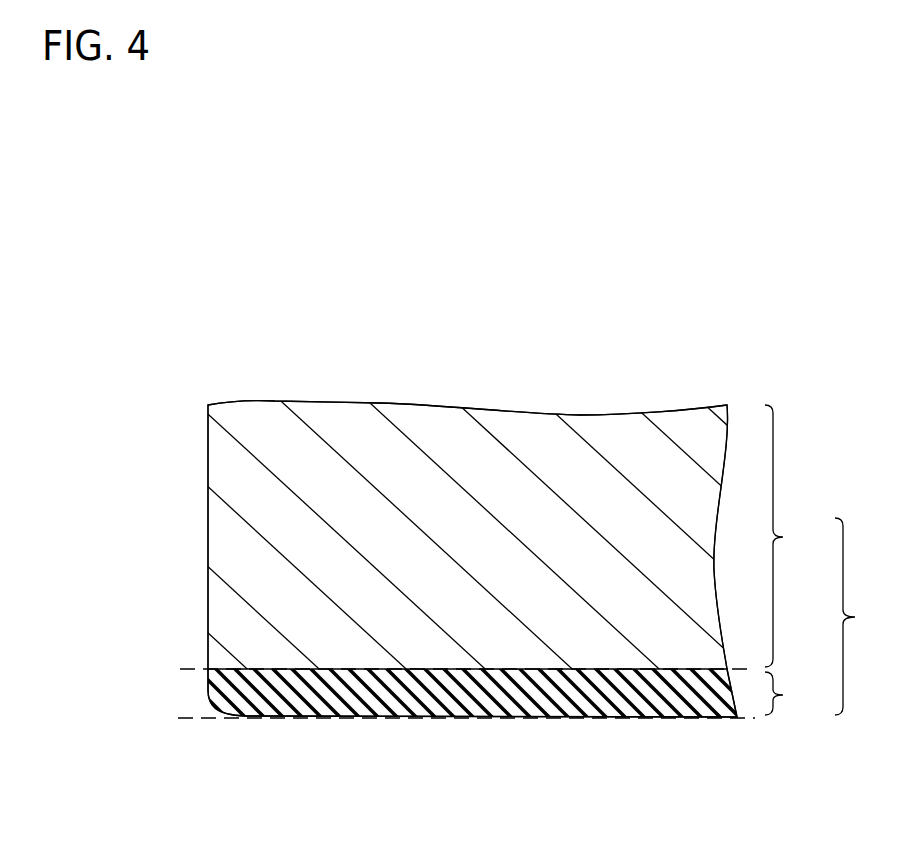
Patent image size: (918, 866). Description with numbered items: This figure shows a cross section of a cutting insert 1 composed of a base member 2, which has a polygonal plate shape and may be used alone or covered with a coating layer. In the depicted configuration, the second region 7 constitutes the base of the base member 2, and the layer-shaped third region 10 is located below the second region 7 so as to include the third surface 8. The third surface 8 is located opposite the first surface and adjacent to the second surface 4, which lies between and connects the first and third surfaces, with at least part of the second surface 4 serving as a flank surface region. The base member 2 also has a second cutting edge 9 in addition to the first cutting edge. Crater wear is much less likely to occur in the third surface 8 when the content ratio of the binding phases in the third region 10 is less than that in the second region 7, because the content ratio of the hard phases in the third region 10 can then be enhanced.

The cutting insert 1 is at (392, 337).
The base member 2 is at (858, 616).
The second surface 4 is at (208, 528).
The second region 7 is at (788, 536).
The third surface 8 is at (502, 718).
The second cutting edge 9 is at (208, 697).
The third region 10 is at (500, 692).